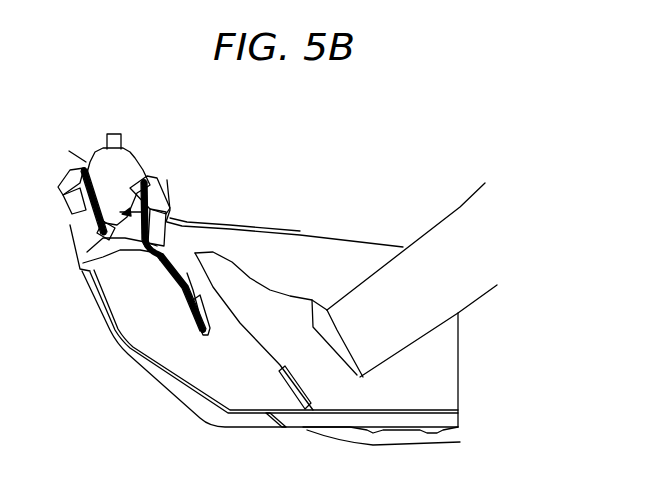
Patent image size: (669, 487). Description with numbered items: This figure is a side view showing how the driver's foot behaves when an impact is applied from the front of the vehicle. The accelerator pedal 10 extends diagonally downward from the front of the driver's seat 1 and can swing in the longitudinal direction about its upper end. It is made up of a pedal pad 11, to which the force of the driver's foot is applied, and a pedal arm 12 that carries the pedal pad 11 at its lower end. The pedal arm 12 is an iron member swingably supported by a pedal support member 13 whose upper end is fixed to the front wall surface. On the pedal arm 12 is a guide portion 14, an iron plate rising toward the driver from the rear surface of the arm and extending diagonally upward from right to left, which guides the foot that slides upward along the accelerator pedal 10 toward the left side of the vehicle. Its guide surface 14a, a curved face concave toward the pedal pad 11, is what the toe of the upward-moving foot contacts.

The driver's seat 1 is at (581, 332).
The accelerator pedal 10 is at (177, 244).
The pedal pad 11 is at (212, 336).
The pedal arm 12 is at (163, 262).
The pedal support member 13 is at (120, 159).
The guide portion 14 is at (172, 219).
The guide surface 14a is at (166, 212).